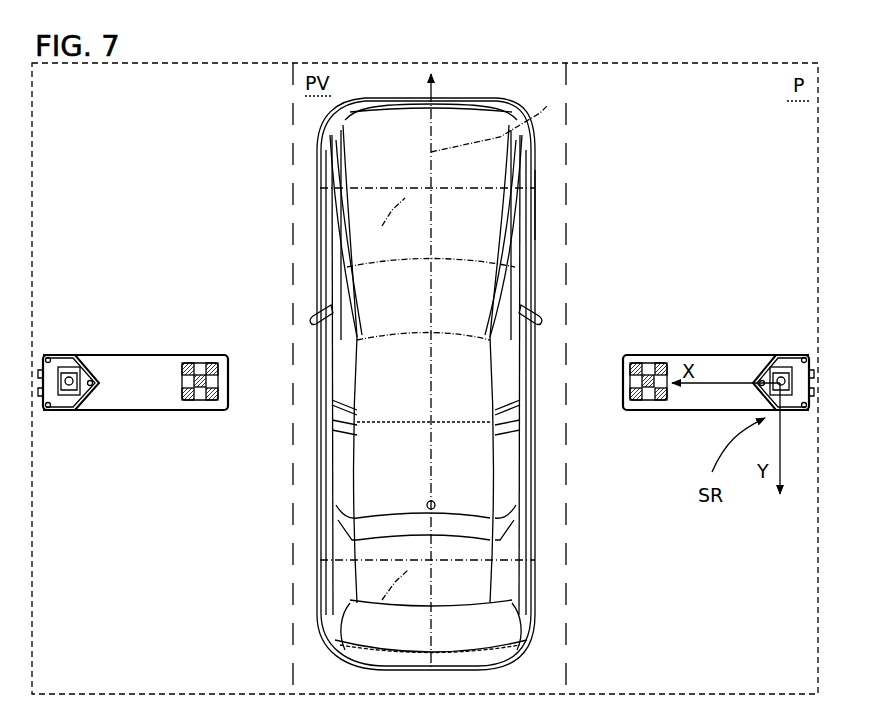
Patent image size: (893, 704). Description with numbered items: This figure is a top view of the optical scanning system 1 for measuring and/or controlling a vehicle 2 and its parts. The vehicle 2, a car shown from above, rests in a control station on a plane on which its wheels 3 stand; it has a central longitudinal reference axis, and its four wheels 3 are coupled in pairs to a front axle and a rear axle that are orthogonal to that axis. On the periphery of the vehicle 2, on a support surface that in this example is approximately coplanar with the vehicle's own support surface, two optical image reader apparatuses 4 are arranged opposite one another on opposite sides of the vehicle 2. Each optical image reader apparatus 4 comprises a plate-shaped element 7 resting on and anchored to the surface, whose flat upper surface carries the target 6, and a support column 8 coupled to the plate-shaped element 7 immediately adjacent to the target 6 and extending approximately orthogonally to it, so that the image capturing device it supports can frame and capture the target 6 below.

The optical scanning system 1 is at (197, 538).
The vehicle 2 is at (528, 199).
The wheels 3 is at (316, 182).
The optical image reader apparatus 4 is at (78, 415).
The target 6 is at (212, 370).
The plate-shaped element 7 is at (125, 360).
The support column 8 is at (55, 410).